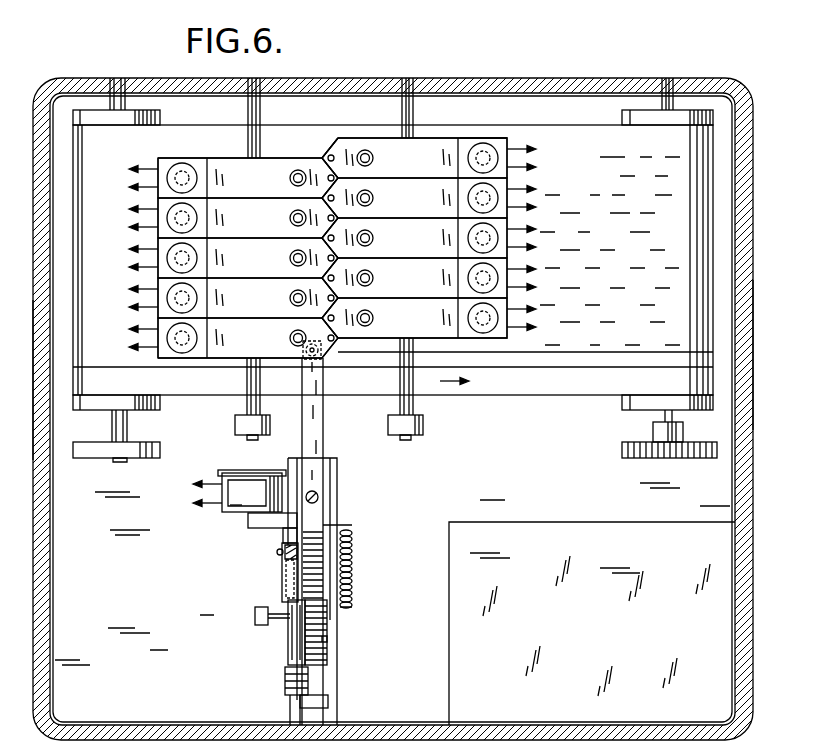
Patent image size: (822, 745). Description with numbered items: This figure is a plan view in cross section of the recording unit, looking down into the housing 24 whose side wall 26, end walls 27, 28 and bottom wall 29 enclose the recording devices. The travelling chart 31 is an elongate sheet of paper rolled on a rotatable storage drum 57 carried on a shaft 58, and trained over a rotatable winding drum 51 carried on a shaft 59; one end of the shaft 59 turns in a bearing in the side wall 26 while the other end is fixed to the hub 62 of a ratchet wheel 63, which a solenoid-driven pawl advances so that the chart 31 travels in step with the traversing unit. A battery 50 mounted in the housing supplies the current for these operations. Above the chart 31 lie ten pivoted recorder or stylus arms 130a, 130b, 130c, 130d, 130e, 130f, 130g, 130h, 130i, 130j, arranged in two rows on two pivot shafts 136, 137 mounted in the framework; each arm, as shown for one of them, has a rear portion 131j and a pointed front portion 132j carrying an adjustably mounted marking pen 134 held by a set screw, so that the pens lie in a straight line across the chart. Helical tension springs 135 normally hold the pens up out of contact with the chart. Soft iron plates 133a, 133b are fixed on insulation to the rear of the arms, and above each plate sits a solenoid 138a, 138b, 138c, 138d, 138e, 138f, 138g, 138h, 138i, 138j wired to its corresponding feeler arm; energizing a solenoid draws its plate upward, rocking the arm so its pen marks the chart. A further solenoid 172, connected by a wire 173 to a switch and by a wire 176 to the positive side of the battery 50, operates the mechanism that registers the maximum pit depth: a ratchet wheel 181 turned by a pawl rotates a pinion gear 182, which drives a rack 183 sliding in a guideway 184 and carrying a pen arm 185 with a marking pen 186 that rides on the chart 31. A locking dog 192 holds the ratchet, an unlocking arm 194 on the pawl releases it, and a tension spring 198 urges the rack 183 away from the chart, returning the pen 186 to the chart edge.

The housing 24 is at (437, 78).
The side wall 26 is at (512, 86).
The end wall 27 is at (40, 382).
The end wall 28 is at (744, 352).
The bottom wall 29 is at (471, 495).
The chart 31 is at (539, 343).
The battery 50 is at (602, 626).
The winding drum 51 is at (633, 409).
The storage drum 57 is at (160, 410).
The shaft 58 is at (118, 78).
The shaft 59 is at (668, 78).
The hub 62 is at (684, 430).
The ratchet wheel 63 is at (670, 452).
The recorder arm 130a is at (254, 348).
The recorder arm 130b is at (424, 328).
The recorder arm 130c is at (254, 308).
The recorder arm 130d is at (424, 288).
The recorder arm 130e is at (254, 268).
The recorder arm 130f is at (424, 248).
The recorder arm 130g is at (254, 228).
The recorder arm 130h is at (424, 208).
The recorder arm 130i is at (254, 188).
The recorder arm 130j is at (424, 168).
The rear portion 131j is at (510, 140).
The front portion 132j is at (341, 137).
The soft iron plate 133a is at (163, 362).
The soft iron plate 133b is at (500, 342).
The marking pen 134 is at (330, 177).
The helical tension spring 135 is at (296, 170).
The pivot shaft 136 is at (415, 404).
The pivot shaft 137 is at (248, 418).
The solenoid 138a is at (182, 354).
The solenoid 138b is at (498, 318).
The solenoid 138c is at (171, 307).
The solenoid 138d is at (498, 278).
The solenoid 138e is at (171, 251).
The solenoid 138f is at (498, 238).
The solenoid 138g is at (171, 210).
The solenoid 138h is at (495, 191).
The solenoid 138i is at (182, 164).
The solenoid 138j is at (483, 143).
The solenoid 172 is at (236, 510).
The wire 173 is at (197, 484).
The wire 176 is at (200, 506).
The ratchet wheel 181 is at (290, 680).
The pinion gear 182 is at (322, 640).
The rack 183 is at (318, 556).
The guideway 184 is at (323, 686).
The pen arm 185 is at (323, 432).
The marking pen 186 is at (308, 360).
The locking dog 192 is at (292, 650).
The unlocking arm 194 is at (290, 581).
The tension spring 198 is at (352, 584).